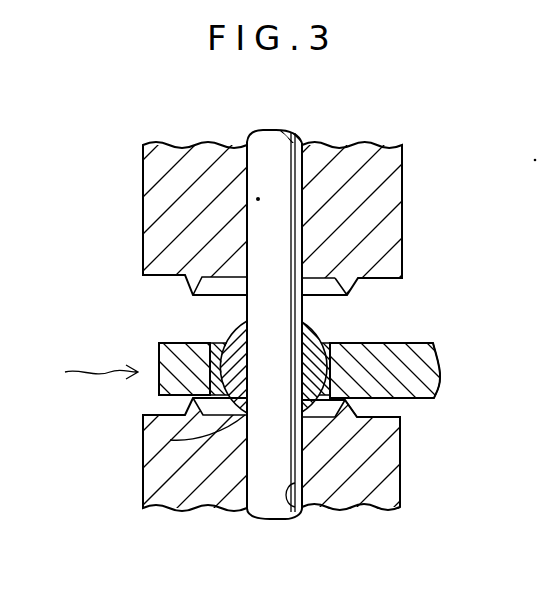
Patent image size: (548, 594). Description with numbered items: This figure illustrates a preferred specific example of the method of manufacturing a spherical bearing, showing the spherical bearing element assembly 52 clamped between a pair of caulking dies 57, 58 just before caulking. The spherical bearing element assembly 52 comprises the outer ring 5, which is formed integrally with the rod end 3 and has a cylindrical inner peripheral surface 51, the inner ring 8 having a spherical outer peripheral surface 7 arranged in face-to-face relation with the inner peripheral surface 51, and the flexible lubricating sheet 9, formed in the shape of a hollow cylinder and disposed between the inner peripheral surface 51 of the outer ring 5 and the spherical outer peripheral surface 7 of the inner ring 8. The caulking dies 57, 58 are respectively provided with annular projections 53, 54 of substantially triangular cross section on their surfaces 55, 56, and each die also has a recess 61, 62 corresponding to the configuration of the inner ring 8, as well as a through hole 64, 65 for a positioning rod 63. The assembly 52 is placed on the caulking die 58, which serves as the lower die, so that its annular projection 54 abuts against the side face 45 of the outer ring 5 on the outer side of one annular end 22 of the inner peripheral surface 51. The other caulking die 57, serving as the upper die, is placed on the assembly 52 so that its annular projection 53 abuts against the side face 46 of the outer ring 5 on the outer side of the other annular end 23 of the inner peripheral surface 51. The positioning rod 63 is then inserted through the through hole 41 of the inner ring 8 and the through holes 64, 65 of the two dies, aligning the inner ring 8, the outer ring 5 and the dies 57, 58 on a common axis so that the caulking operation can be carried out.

The rod end 3 is at (415, 360).
The outer ring 5 is at (347, 345).
The spherical outer peripheral surface 7 is at (306, 332).
The inner ring 8 is at (422, 401).
The flexible lubricating sheet 9 is at (177, 358).
The one annular end 22 is at (170, 440).
The other annular end 23 is at (215, 345).
The through hole 41 is at (267, 398).
The side face 45 is at (368, 405).
The side face 46 is at (385, 345).
The cylindrical inner peripheral surface 51 is at (235, 338).
The spherical bearing element assembly 52 is at (81, 374).
The annular projection 53 is at (403, 230).
The annular projection 54 is at (347, 402).
The surface 55 is at (152, 284).
The surface 56 is at (178, 403).
The caulking die 57 is at (148, 165).
The caulking die 58 is at (155, 485).
The recess 61 is at (305, 232).
The recess 62 is at (302, 452).
The positioning rod 63 is at (302, 462).
The through hole 64 is at (256, 200).
The through hole 65 is at (296, 513).